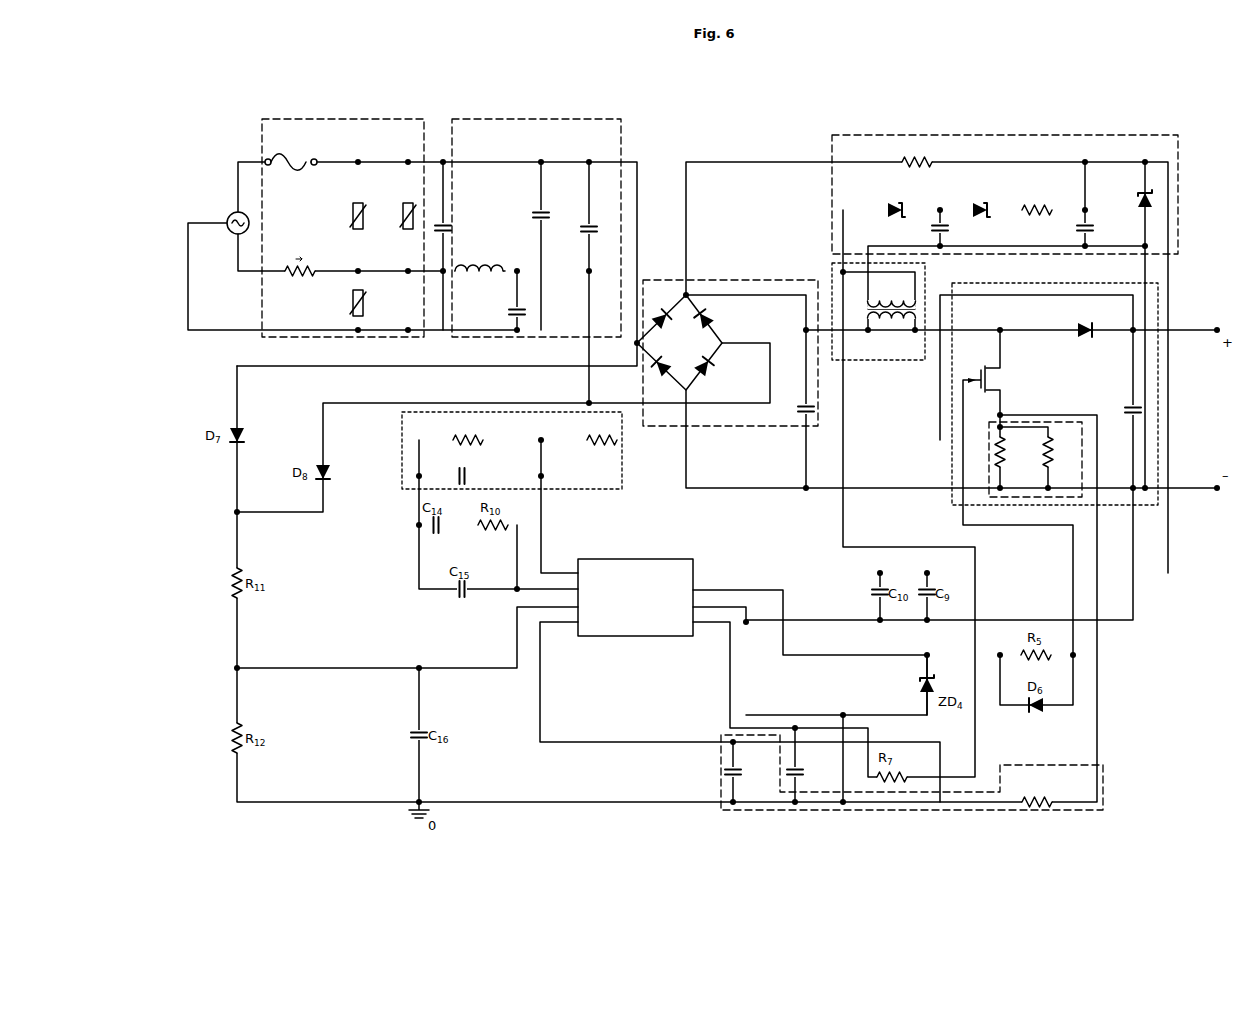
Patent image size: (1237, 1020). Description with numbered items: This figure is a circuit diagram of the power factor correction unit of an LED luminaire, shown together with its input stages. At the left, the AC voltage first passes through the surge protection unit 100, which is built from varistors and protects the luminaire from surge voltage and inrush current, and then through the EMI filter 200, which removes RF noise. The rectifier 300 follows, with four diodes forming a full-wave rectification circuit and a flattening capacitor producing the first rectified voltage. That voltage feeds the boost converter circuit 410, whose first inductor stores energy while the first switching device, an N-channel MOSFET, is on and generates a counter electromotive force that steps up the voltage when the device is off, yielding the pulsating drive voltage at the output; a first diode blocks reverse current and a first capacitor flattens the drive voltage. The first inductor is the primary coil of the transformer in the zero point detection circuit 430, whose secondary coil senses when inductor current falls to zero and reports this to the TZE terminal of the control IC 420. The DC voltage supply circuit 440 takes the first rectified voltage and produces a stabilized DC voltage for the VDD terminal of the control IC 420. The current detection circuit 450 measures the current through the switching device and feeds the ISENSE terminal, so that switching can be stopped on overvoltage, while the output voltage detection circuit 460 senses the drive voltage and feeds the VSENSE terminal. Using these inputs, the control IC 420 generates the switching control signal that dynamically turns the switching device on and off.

The surge protection unit 100 is at (347, 119).
The EMI filter 200 is at (539, 119).
The rectifier 300 is at (733, 280).
The converter circuit 410 is at (1158, 393).
The control IC 420 is at (640, 559).
The zero point detection circuit 430 is at (872, 362).
The DC voltage supply circuit 440 is at (1006, 135).
The current detection circuit 450 is at (1082, 452).
The output voltage detection circuit 460 is at (585, 492).